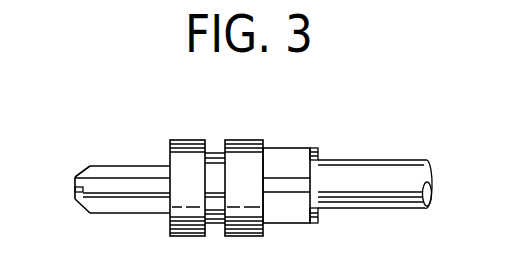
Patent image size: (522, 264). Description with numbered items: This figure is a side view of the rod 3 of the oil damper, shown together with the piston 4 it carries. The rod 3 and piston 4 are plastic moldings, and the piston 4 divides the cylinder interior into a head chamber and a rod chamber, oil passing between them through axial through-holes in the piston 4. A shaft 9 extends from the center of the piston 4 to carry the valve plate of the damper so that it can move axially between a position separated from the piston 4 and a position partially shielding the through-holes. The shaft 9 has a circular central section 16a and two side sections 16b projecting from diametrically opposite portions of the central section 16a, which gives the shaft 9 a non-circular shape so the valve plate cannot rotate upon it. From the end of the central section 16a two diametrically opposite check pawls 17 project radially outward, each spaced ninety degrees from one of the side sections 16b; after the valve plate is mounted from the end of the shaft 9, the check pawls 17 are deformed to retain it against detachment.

The rod 3 is at (350, 170).
The piston 4 is at (183, 153).
The shaft 9 is at (148, 85).
The circular central section 16a is at (133, 185).
The side sections 16b is at (97, 213).
The check pawls 17 is at (75, 190).